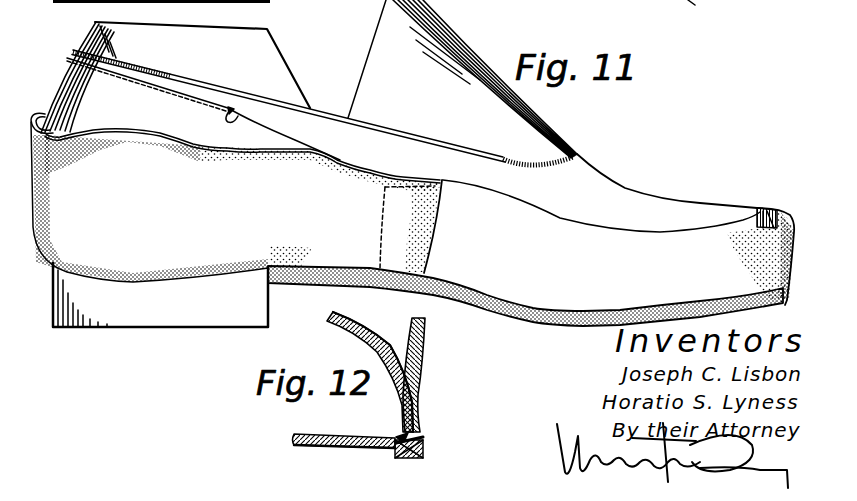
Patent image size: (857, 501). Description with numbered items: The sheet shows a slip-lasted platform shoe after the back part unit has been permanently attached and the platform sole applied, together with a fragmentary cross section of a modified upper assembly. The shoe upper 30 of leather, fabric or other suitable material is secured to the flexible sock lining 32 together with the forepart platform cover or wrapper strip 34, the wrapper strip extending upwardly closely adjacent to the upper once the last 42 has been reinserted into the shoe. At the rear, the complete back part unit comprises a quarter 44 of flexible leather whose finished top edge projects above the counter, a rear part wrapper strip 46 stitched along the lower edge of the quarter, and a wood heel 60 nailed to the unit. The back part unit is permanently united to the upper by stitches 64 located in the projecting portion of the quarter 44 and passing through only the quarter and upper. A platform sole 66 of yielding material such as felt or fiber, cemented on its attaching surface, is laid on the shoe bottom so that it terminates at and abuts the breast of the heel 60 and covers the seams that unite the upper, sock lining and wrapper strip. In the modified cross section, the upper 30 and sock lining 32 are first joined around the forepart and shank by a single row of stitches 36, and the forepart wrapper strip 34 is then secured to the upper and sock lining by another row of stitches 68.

In FIG. 11, the shoe upper 30 is at (615, 201).
In FIG. 12, the shoe upper 30 is at (377, 333).
In FIG. 12, the sock lining 32 is at (313, 447).
In FIG. 11, the forepart platform cover or wrapper strip 34 is at (663, 247).
In FIG. 12, the forepart platform cover or wrapper strip 34 is at (432, 362).
In FIG. 11, the stitches 36 is at (703, 9).
In FIG. 12, the stitches 36 is at (397, 428).
In FIG. 11, the last 42 is at (450, 78).
In FIG. 11, the quarter 44 is at (65, 97).
In FIG. 11, the rear part wrapper strip 46 is at (335, 176).
In FIG. 11, the wood heel 60 is at (170, 312).
In FIG. 11, the stitches 64 is at (250, 114).
In FIG. 11, the platform sole 66 is at (549, 322).
In FIG. 12, the stitches 68 is at (425, 450).